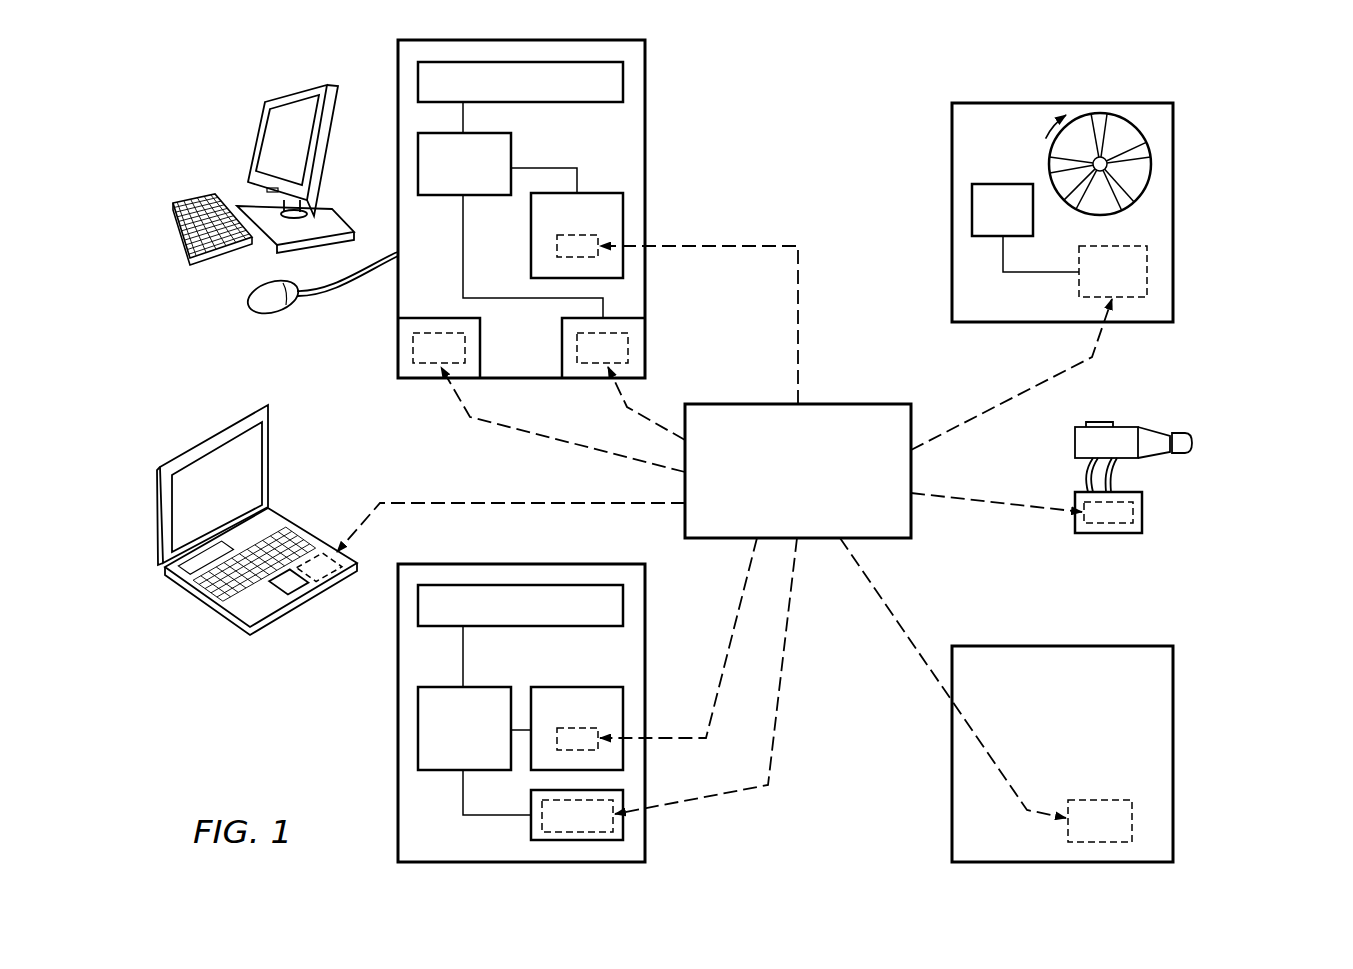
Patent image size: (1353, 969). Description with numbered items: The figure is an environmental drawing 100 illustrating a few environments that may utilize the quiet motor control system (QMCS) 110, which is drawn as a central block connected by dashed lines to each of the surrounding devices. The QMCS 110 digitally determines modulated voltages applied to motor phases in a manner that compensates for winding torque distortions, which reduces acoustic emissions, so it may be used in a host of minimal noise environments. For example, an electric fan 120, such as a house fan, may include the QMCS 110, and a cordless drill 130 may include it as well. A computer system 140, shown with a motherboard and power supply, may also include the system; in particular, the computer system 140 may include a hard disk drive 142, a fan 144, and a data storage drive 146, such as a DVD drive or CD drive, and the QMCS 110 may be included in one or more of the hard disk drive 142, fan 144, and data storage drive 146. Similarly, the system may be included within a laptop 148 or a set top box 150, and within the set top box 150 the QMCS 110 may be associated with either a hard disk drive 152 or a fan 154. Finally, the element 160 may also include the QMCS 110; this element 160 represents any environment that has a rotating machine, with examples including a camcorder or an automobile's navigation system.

The environmental drawing 100 is at (1272, 80).
The quiet motor control system 110 is at (817, 506).
The electric fan 120 is at (1177, 207).
The cordless drill 130 is at (1155, 413).
The computer system 140 is at (219, 148).
The hard disk drive 142 is at (562, 350).
The fan 144 is at (596, 193).
The data storage drive 146 is at (440, 317).
The laptop 148 is at (192, 415).
The set top box 150 is at (394, 744).
The hard disk drive 152 is at (530, 825).
The fan 154 is at (578, 687).
The element 160 is at (1177, 757).